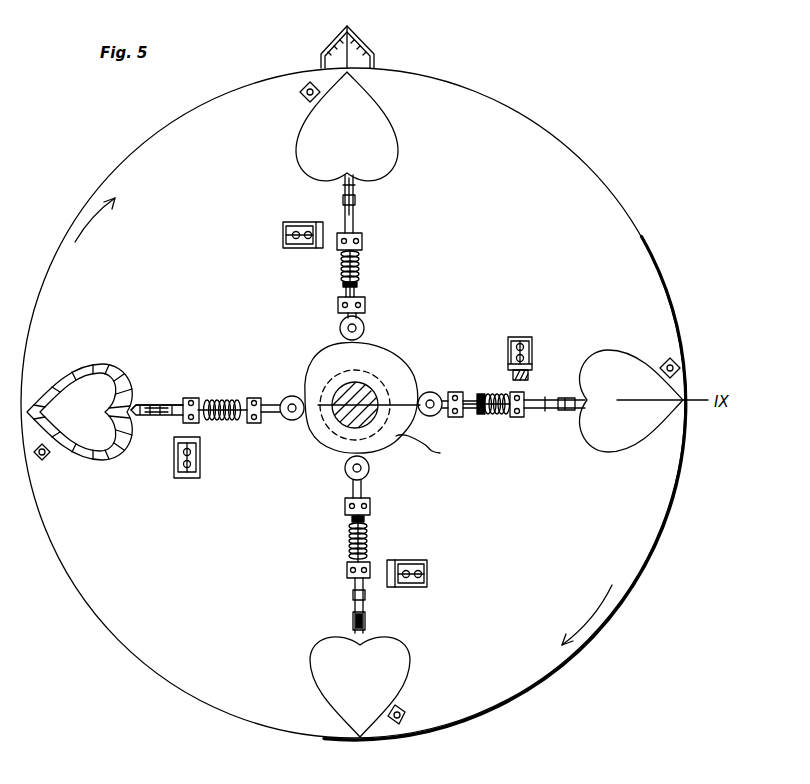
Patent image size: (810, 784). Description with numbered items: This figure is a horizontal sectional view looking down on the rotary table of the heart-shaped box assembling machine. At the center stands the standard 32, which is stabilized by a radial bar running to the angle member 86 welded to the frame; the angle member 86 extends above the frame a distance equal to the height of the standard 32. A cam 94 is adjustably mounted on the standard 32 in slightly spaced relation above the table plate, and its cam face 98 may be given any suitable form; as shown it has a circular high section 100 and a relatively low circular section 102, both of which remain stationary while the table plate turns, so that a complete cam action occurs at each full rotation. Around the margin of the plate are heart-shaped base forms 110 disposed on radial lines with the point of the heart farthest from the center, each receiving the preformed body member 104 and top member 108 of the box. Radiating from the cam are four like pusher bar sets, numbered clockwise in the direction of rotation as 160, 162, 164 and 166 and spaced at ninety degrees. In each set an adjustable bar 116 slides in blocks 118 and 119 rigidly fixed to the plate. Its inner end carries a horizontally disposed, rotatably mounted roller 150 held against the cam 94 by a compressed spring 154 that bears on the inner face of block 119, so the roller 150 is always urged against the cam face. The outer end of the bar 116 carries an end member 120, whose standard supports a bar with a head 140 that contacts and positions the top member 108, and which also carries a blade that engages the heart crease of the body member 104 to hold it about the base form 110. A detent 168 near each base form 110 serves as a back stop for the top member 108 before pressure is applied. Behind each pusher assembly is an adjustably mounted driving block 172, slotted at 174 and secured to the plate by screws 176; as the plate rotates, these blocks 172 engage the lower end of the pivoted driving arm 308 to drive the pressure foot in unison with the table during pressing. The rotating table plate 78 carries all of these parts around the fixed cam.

The standard 32 is at (348, 432).
The rotating disc 78 is at (646, 574).
The angle member 86 is at (362, 40).
The cam 94 is at (422, 382).
The cam face 98 is at (440, 453).
The circular high section 100 is at (388, 352).
The low circular section 102 is at (328, 440).
The body member 104 is at (82, 392).
The top member 108 is at (388, 136).
The base form 110 is at (82, 392).
The adjustable bar 116 is at (292, 420).
The block 118 is at (256, 424).
The block 119 is at (183, 404).
The end member 120 is at (163, 416).
The head 140 is at (590, 402).
The roller 150 is at (288, 396).
The compressed spring 154 is at (222, 398).
The pusher bar set 160 is at (391, 267).
The pusher bar set 162 is at (494, 421).
The pusher bar set 164 is at (328, 559).
The pusher bar set 166 is at (179, 373).
The detent 168 is at (302, 102).
The driving block 172 is at (202, 445).
The slot 174 is at (405, 587).
The screws 176 is at (191, 463).
The driving arm 308 is at (512, 378).